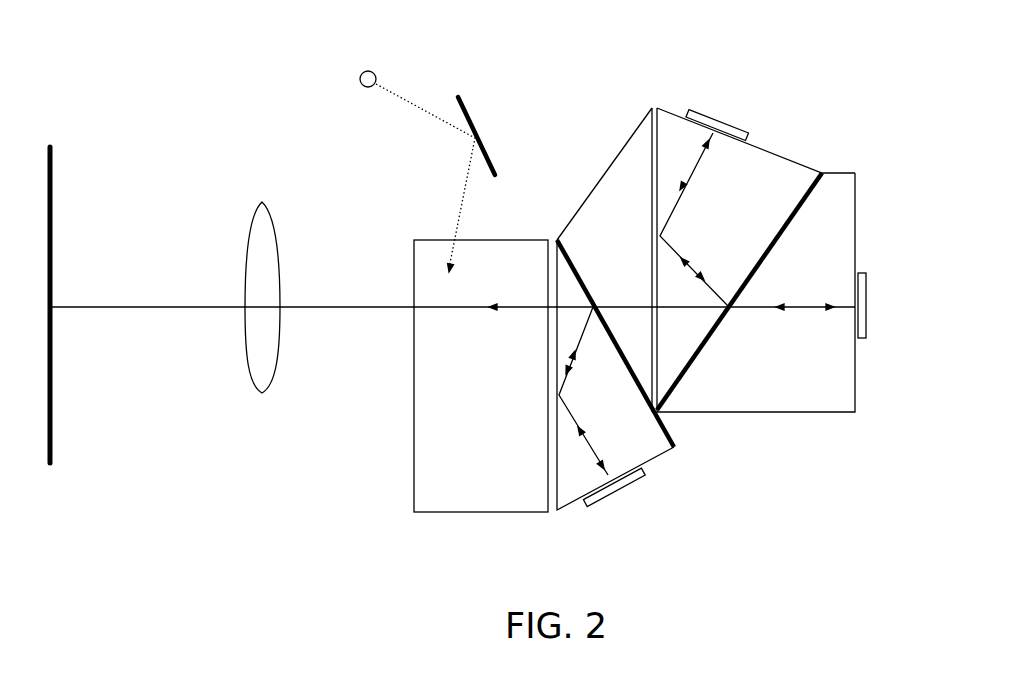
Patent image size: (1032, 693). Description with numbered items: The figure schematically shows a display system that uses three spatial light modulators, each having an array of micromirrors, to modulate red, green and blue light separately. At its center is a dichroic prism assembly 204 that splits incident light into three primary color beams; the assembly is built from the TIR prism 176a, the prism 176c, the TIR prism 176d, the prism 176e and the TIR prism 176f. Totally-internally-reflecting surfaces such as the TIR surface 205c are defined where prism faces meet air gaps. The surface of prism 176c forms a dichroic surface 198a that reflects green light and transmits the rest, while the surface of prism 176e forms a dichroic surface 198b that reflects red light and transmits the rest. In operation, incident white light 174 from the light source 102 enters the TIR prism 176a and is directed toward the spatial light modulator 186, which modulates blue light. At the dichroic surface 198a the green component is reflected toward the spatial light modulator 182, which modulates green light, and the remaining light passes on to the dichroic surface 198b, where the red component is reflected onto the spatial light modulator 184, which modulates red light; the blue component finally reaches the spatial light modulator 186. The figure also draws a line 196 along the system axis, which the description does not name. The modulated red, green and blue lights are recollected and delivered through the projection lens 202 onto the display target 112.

The display target 112 is at (53, 168).
The projection lens 202 is at (262, 202).
The optical axis / light path 196 is at (377, 300).
The light source 102 is at (351, 102).
The incident white light 174 is at (422, 144).
The dichroic prism assembly 204 is at (637, 122).
The TIR prism 176a is at (413, 413).
The prism 176c is at (658, 456).
The TIR prism 176d is at (640, 232).
The prism 176e is at (795, 199).
The TIR prism 176f is at (828, 407).
The dichroic surface 198a is at (678, 442).
The dichroic surface 198b is at (818, 187).
The TIR surface 205c is at (658, 117).
The spatial light modulator 184 is at (742, 108).
The spatial light modulator 182 is at (653, 517).
The spatial light modulator 186 is at (911, 319).